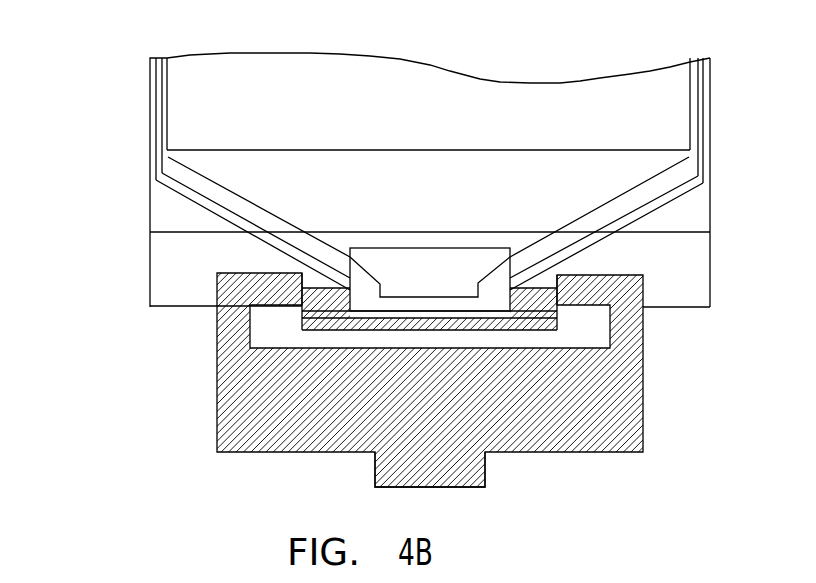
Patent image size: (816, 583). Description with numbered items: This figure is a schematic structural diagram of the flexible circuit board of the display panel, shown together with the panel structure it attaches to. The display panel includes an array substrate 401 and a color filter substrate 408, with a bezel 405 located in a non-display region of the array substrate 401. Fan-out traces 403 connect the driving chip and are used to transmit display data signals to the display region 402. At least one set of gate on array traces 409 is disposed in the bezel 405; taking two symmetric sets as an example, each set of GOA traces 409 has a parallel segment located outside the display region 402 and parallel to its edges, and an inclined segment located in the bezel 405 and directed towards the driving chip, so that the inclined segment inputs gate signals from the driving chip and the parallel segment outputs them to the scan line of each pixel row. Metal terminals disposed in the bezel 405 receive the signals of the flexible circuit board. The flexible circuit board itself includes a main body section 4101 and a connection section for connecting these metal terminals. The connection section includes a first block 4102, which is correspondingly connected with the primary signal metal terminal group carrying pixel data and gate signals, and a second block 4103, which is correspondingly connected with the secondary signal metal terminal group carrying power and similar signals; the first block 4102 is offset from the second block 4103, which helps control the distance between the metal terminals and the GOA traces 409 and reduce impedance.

The array substrate 401 is at (375, 215).
The display region 402 is at (428, 80).
The fan-out traces 403 is at (428, 133).
The bezel 405 is at (375, 279).
The color filter substrate 408 is at (371, 231).
The gate on array (GOA) traces 409 is at (150, 110).
The main body section 4101 is at (370, 478).
The first block 4102 is at (408, 380).
The second block 4103 is at (408, 380).